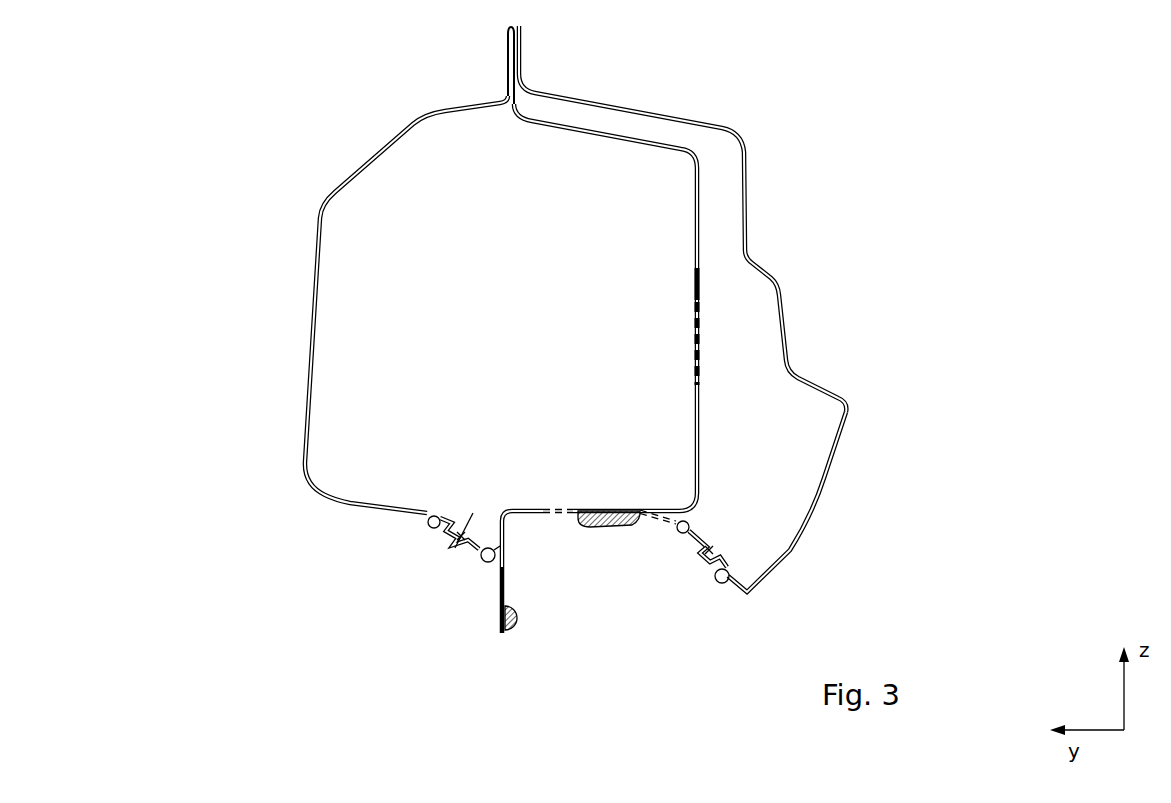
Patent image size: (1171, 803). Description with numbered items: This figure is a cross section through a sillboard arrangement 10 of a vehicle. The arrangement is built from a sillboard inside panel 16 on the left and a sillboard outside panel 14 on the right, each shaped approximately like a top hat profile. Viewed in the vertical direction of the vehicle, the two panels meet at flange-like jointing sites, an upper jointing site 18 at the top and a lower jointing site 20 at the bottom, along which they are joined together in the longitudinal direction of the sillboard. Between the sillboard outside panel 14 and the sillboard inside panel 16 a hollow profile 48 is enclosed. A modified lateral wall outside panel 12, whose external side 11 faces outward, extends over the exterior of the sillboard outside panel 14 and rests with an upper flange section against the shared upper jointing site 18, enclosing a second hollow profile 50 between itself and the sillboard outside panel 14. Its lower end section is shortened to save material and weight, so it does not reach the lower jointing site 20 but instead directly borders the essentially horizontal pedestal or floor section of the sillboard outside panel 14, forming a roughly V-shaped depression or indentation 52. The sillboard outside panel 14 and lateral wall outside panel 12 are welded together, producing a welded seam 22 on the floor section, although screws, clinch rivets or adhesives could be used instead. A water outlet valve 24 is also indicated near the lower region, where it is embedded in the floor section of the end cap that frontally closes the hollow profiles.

The sillboard arrangement 10 is at (936, 302).
The external side 11 is at (812, 520).
The lateral wall outside panel 12 is at (874, 457).
The sillboard outside panel 14 is at (696, 270).
The sillboard inside panel 16 is at (308, 350).
The upper jointing site 18 is at (507, 62).
The lower jointing site 20 is at (498, 587).
The welded seam 22 is at (611, 547).
The water outlet valve 24 is at (703, 563).
The hollow profile 48 is at (507, 355).
The hollow profile 50 is at (765, 412).
The depression or indentation 52 is at (752, 542).